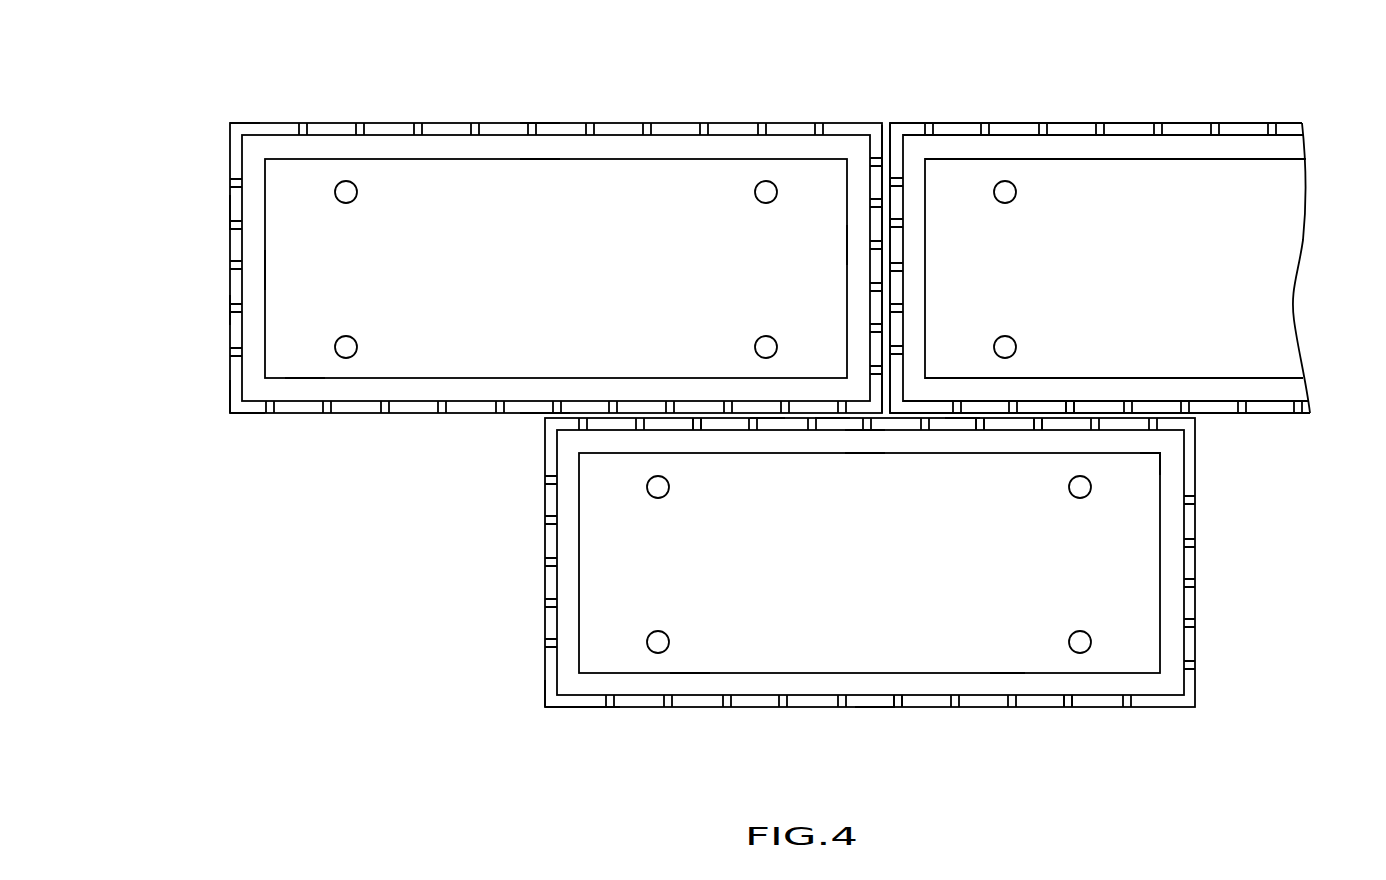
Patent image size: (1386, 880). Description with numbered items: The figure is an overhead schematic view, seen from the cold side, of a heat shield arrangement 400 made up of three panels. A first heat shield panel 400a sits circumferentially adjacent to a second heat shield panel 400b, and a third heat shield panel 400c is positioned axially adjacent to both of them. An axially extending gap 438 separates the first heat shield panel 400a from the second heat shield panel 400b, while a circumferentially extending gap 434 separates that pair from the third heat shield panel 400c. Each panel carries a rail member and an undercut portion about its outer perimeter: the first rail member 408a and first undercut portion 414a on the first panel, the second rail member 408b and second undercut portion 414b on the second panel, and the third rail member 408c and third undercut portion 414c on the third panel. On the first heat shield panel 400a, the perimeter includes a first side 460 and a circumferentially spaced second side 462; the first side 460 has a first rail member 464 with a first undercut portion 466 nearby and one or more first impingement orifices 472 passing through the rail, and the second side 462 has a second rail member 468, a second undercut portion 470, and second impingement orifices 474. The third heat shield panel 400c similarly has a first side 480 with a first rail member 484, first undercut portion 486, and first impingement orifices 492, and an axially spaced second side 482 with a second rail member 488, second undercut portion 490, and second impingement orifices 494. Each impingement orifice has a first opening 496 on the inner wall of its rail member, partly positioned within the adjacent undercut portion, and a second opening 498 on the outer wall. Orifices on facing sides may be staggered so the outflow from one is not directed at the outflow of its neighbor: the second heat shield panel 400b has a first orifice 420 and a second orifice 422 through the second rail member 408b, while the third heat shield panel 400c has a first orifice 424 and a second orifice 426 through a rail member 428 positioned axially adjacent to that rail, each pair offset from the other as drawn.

The heat shield arrangement 400 is at (430, 95).
The first heat shield panel 400a is at (514, 259).
The second heat shield panel 400b is at (1085, 269).
The third heat shield panel 400c is at (815, 570).
The first side 460 is at (232, 128).
The first rail member 464 is at (235, 212).
The first undercut portion 466 is at (257, 268).
The first impingement orifices 472 is at (235, 308).
The second opening 498 is at (540, 128).
The first opening 496 is at (536, 160).
The second side 462 is at (885, 135).
The axially extending gap 438 is at (895, 130).
The second rail member 468 is at (876, 190).
The second undercut portion 470 is at (850, 243).
The second impingement orifices 474 is at (876, 288).
The first orifice 420 is at (1012, 410).
The second orifice 422 is at (1070, 410).
The first rail member 408a is at (248, 414).
The first undercut portion 414a is at (305, 383).
The circumferentially extending gap 434 is at (542, 412).
The first impingement orifices 492 is at (697, 425).
The first side 480 is at (766, 418).
The first rail member 484 is at (834, 418).
The first undercut portion 486 is at (863, 442).
The rail member 428 is at (963, 425).
The first orifice 424 is at (983, 425).
The second orifice 426 is at (1040, 425).
The second rail member 408b is at (1237, 415).
The second undercut portion 414b is at (1280, 385).
The third rail member 408c is at (597, 710).
The third undercut portion 414c is at (690, 678).
The second side 482 is at (873, 710).
The second rail member 488 is at (918, 710).
The second undercut portion 490 is at (1007, 685).
The second impingement orifices 494 is at (1070, 710).